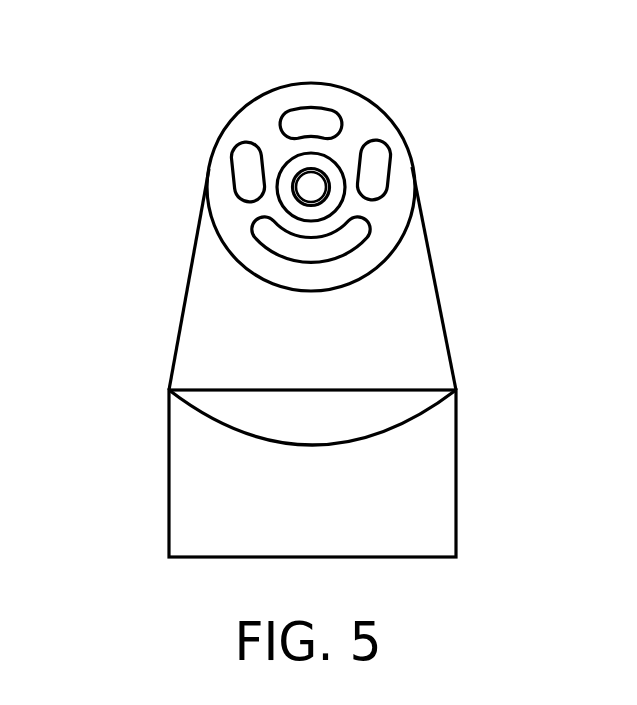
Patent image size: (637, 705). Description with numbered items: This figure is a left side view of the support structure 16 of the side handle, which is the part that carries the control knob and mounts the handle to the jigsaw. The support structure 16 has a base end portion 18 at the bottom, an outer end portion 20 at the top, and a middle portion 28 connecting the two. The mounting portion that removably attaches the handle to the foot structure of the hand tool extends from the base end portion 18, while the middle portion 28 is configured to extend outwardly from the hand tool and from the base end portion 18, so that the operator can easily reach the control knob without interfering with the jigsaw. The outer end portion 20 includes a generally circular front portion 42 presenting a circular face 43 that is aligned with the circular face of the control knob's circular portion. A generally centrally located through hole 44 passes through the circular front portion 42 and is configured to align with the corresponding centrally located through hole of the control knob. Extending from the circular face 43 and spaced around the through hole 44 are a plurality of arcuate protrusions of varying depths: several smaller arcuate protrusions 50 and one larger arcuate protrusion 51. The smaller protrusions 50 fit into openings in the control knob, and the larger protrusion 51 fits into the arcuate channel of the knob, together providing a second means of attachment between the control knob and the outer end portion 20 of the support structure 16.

The support structure 16 is at (75, 242).
The base end portion 18 is at (457, 488).
The outer end portion 20 is at (423, 222).
The middle portion 28 is at (392, 328).
The circular front portion 42 is at (333, 88).
The circular face 43 is at (262, 117).
The through hole 44 is at (312, 185).
The smaller arcuate protrusions 50 is at (250, 158).
The larger arcuate protrusion 51 is at (295, 250).